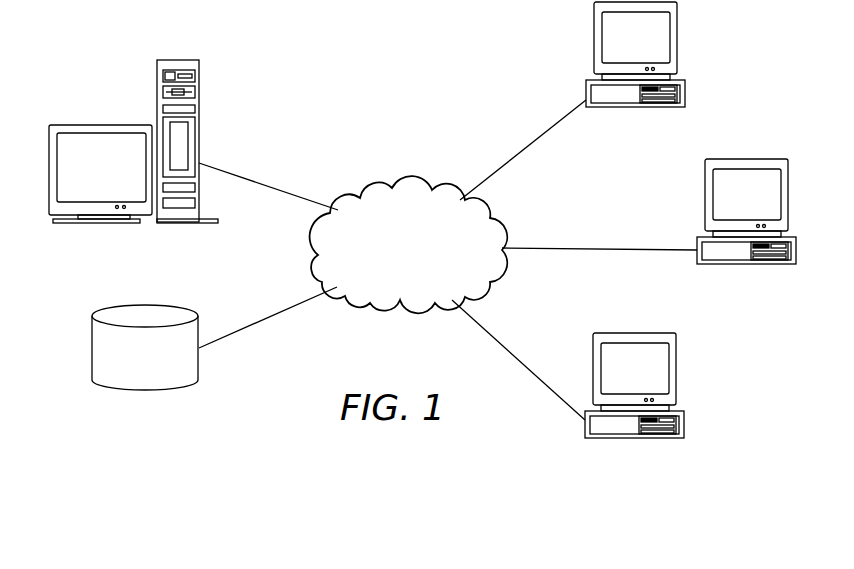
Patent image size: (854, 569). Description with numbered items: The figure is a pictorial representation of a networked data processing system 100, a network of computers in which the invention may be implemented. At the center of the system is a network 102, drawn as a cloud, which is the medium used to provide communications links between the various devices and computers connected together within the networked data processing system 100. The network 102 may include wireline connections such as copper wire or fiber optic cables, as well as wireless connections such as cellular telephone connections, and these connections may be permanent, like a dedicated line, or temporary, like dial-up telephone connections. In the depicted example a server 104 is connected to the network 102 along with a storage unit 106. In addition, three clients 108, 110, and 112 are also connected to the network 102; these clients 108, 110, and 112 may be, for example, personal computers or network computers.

The networked data processing system 100 is at (284, 50).
The network 102 is at (396, 258).
The server 104 is at (157, 85).
The storage unit 106 is at (92, 348).
The client 108 is at (677, 47).
The client 110 is at (788, 200).
The client 112 is at (676, 378).